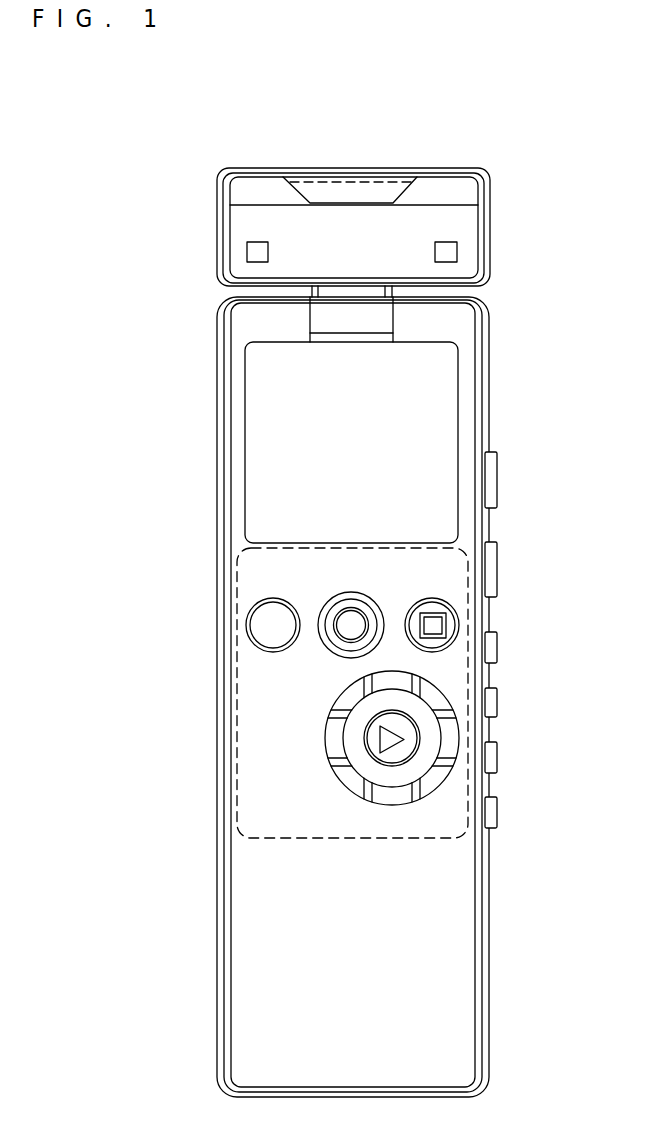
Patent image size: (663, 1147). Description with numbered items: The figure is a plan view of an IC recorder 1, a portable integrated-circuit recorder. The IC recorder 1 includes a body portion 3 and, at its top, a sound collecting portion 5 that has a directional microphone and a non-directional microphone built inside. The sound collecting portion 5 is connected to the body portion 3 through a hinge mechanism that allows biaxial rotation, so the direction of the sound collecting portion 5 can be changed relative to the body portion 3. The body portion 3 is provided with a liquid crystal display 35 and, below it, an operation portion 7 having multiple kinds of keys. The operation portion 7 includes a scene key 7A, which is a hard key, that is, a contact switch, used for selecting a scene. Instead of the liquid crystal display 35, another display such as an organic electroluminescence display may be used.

The IC recorder 1 is at (135, 104).
The body portion 3 is at (217, 782).
The sound collecting portion 5 is at (217, 232).
The operation portion 7 is at (430, 840).
The scene key 7A is at (263, 622).
The liquid crystal display (LCD) 35 is at (280, 428).